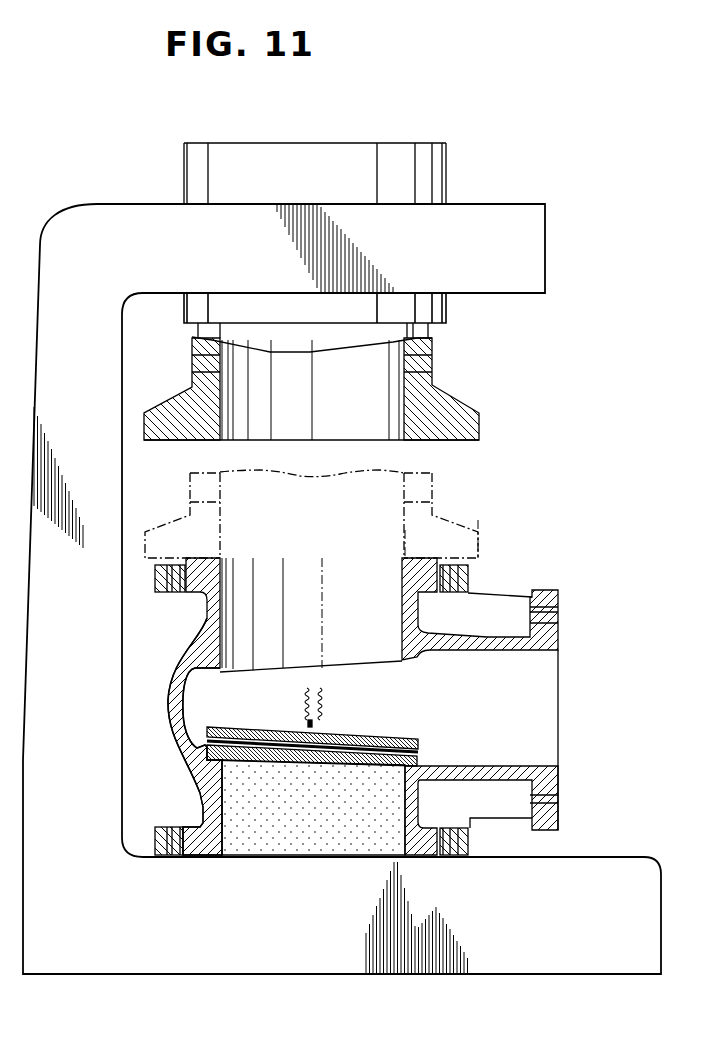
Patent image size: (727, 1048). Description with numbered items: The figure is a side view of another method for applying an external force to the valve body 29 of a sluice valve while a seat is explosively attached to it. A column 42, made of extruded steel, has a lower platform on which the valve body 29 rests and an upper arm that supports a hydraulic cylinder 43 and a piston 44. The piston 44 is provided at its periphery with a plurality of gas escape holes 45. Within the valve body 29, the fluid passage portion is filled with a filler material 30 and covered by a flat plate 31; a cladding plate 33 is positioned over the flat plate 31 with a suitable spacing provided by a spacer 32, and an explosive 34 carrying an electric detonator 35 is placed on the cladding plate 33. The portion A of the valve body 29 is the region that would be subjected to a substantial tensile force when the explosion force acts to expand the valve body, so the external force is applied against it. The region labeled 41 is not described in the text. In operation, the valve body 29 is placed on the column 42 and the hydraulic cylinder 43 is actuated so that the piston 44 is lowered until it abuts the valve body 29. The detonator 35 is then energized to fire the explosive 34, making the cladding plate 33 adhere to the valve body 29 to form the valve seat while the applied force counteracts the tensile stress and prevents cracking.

The column 42 is at (527, 963).
The hydraulic cylinder 43 is at (446, 162).
The piston 44 is at (431, 333).
The gas escape holes 45 is at (432, 370).
The valve body 29 is at (468, 575).
The portion A is at (175, 667).
The spacer 32 is at (188, 748).
The lower body portion 41 is at (207, 757).
The explosive 34 is at (367, 737).
The cladding plate 33 is at (420, 753).
The electric detonator 35 is at (310, 721).
The flat plate 31 is at (345, 768).
The filler material 30 is at (283, 835).